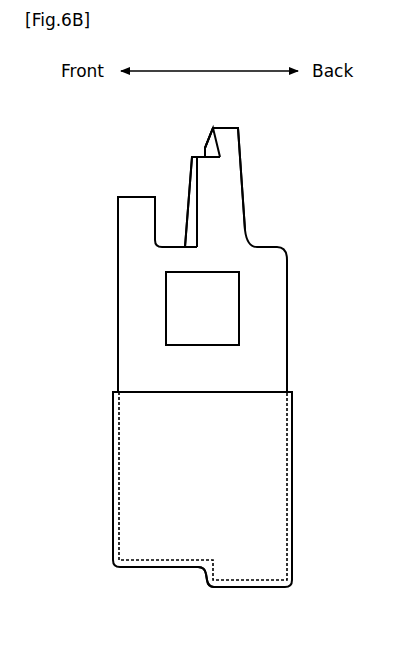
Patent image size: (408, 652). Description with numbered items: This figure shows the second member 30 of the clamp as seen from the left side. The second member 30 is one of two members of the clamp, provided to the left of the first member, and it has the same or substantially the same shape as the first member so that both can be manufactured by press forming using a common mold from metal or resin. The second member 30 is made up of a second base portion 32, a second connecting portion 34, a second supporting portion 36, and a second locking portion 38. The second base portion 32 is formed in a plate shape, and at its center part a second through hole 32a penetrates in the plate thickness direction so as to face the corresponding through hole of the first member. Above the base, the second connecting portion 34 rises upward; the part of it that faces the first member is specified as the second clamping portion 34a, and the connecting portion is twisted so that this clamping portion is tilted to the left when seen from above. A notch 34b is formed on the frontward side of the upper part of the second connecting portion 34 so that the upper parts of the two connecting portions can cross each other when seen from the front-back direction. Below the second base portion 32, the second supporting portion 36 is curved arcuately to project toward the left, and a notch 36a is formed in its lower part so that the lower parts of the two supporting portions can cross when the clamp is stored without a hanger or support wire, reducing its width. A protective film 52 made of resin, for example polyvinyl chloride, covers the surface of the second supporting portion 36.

The second member 30 is at (97, 185).
The second base portion 32 is at (128, 353).
The second through hole 32a is at (225, 342).
The second connecting portion 34 is at (237, 193).
The second clamping portion 34a is at (190, 188).
The notch 34b is at (201, 150).
The second supporting portion 36 is at (277, 435).
The notch 36a is at (188, 573).
The second locking portion 38 is at (125, 225).
The protective film 52 is at (293, 402).